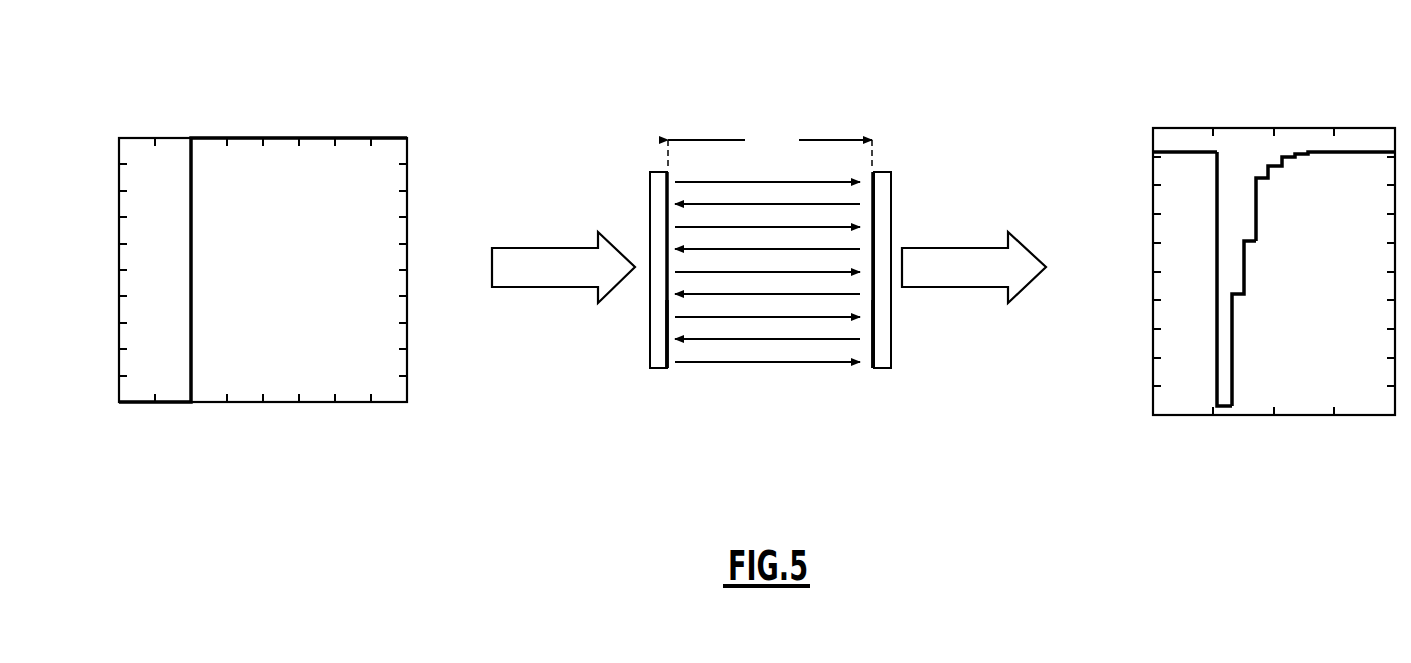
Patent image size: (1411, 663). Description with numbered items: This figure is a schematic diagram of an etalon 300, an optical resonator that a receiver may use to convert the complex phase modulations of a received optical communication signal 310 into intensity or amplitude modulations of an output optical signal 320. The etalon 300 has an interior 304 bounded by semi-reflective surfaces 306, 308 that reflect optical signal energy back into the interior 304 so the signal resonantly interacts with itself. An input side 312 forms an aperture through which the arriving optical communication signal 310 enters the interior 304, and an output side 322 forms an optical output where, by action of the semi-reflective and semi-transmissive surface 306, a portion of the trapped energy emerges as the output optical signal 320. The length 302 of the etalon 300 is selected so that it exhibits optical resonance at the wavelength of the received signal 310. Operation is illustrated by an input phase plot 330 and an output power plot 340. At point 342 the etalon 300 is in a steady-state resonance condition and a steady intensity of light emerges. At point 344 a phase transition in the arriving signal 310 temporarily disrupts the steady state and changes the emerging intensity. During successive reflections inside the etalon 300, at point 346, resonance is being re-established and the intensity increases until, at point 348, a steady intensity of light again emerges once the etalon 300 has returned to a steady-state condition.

The etalon 300 is at (840, 59).
The length 302 is at (770, 148).
The interior 304 is at (772, 370).
The semi-reflective surface 306 is at (867, 369).
The semi-reflective surface 308 is at (672, 369).
The received optical communication signal 310 is at (538, 248).
The input side 312 is at (649, 206).
The output optical signal 320 is at (945, 248).
The output side 322 is at (191, 134).
The input phase plot 330 is at (303, 98).
The output power plot 340 is at (1258, 84).
The point 342 is at (1178, 140).
The point 344 is at (1220, 172).
The point 346 is at (1244, 276).
The point 348 is at (1348, 153).